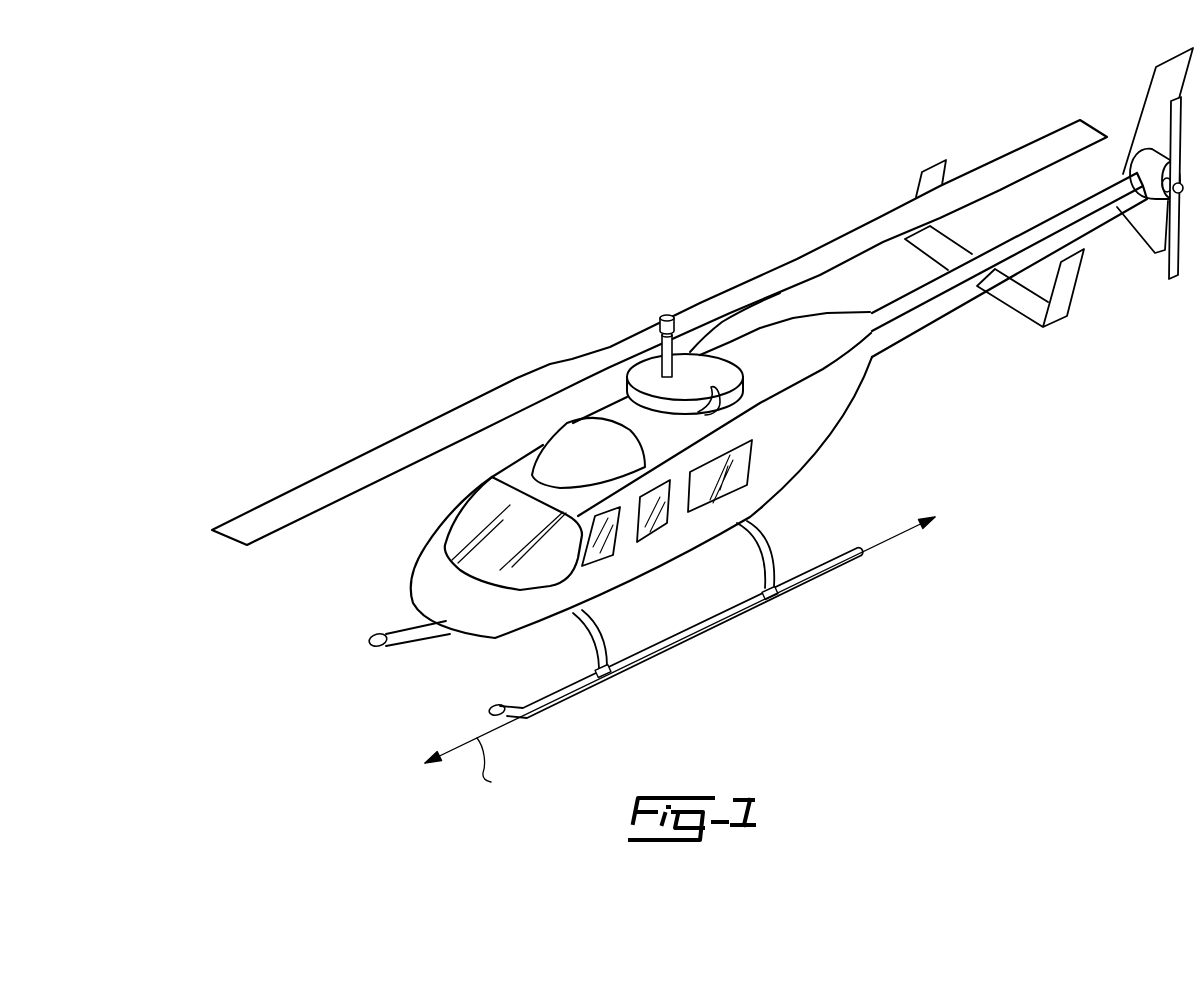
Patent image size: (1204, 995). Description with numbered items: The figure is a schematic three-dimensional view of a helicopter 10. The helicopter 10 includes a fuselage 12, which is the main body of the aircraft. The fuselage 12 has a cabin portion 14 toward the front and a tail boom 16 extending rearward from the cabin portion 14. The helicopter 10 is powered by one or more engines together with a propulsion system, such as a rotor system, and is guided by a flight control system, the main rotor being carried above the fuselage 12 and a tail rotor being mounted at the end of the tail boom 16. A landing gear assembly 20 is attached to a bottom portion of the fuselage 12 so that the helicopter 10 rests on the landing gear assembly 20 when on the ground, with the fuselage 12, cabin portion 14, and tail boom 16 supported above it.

The helicopter 10 is at (702, 425).
The fuselage 12 is at (868, 431).
The cabin portion 14 is at (450, 632).
The tail boom 16 is at (947, 297).
The landing gear assembly 20 is at (763, 598).